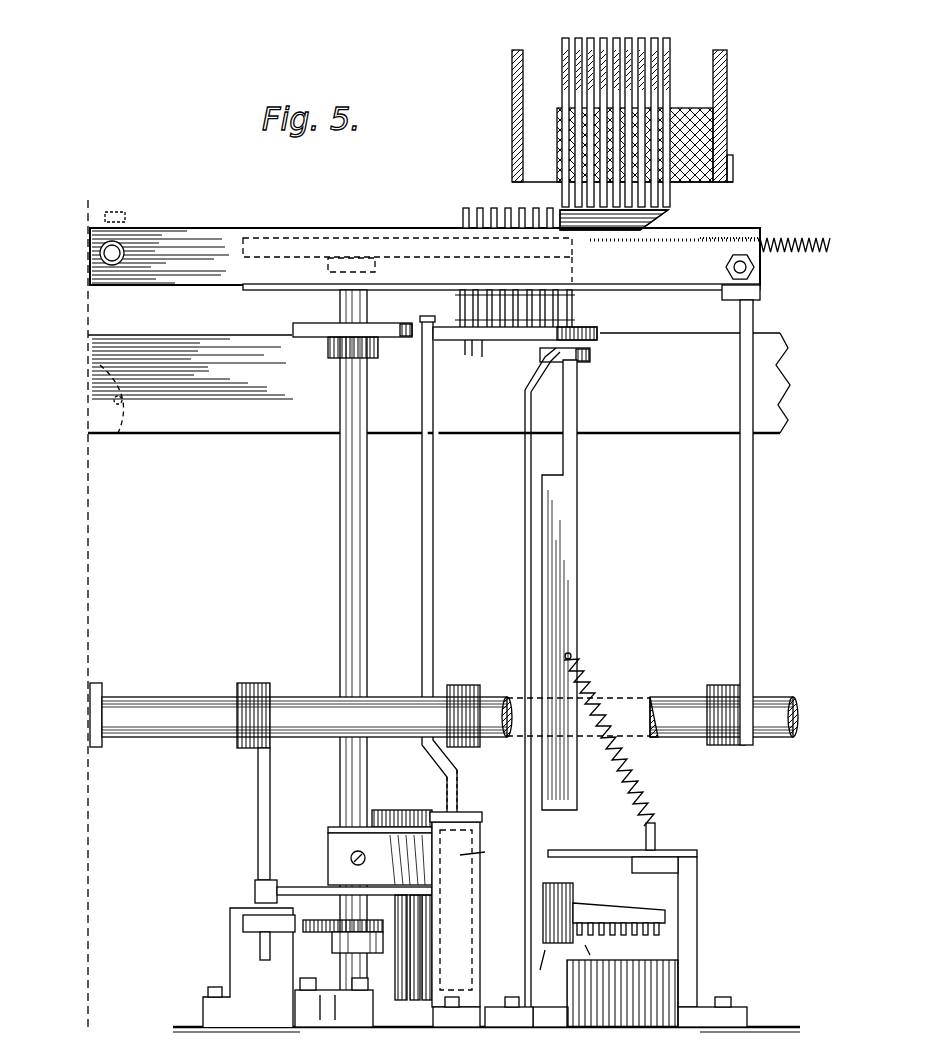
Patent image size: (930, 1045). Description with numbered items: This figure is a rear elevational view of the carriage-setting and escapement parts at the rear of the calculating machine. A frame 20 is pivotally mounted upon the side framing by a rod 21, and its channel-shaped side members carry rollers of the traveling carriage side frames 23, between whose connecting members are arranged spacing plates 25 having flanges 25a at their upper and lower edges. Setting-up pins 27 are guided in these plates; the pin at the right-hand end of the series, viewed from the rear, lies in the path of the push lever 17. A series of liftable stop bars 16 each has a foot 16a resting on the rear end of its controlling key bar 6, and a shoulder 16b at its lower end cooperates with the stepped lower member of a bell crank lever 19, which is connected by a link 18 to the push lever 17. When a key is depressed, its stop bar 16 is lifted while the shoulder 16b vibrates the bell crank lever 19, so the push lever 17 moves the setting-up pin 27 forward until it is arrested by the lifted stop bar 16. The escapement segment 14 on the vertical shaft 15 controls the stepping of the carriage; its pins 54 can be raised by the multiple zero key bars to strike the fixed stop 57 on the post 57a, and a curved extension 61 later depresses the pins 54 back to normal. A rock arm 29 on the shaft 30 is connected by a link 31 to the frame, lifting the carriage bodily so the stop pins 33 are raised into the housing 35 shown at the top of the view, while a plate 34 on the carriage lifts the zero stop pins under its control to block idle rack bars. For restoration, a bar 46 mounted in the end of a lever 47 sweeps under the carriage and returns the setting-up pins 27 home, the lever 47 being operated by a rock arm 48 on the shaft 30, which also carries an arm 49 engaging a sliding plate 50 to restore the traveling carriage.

The key bar 6 is at (592, 961).
The escapement segment 14 is at (300, 887).
The vertical shaft 15 is at (367, 800).
The liftable stop bar 16 is at (570, 810).
The foot 16a is at (620, 905).
The shoulder 16b is at (560, 965).
The push lever 17 is at (542, 576).
The link 18 is at (545, 785).
The bell crank lever 19 is at (531, 797).
The frame 20 is at (228, 270).
The rod 21 is at (115, 265).
The carriage side frame 23 is at (282, 285).
The spacing plate 25 is at (570, 302).
The flange 25a is at (474, 361).
The setting-up pin 27 is at (500, 340).
The rock arm 29 is at (738, 745).
The shaft 30 is at (775, 710).
The link 31 is at (753, 620).
The stop pin 33 is at (650, 218).
The plate 34 is at (645, 232).
The pin housing 35 is at (645, 38).
The bar 46 is at (597, 340).
The lever 47 is at (433, 415).
The rock arm 48 is at (458, 760).
The arm 49 is at (270, 800).
The sliding plate 50 is at (262, 920).
The pin 54 is at (420, 908).
The fixed stop 57 is at (470, 822).
The post 57a is at (491, 851).
The curved extension 61 is at (445, 770).